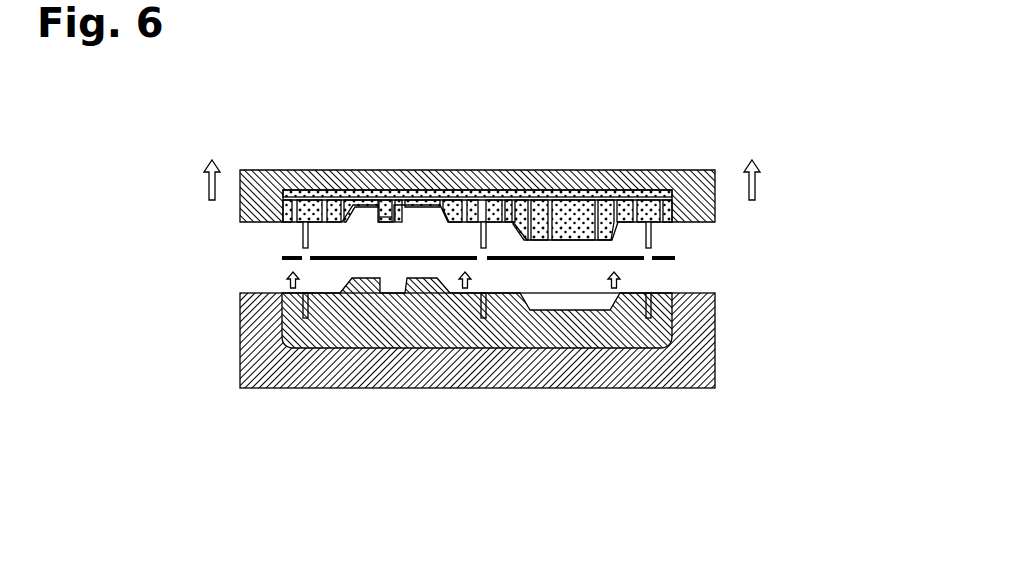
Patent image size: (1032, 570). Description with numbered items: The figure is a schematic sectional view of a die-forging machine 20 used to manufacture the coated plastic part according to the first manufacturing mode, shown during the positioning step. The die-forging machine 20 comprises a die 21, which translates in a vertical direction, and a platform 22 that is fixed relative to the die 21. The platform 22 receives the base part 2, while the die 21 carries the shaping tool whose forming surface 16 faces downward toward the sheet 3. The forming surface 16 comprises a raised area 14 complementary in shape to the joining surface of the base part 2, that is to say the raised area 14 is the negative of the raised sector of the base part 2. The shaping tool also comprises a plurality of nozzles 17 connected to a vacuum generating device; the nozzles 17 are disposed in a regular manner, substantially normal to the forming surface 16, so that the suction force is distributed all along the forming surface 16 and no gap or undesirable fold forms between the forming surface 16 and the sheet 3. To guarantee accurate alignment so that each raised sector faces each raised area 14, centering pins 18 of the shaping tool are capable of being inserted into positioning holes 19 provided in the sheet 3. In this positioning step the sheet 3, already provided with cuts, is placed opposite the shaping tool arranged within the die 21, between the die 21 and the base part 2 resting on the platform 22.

The base part 2 is at (328, 350).
The sheet 3 is at (264, 268).
The raised area 14 is at (410, 243).
The forming surface 16 is at (517, 222).
The nozzles 17 is at (426, 184).
The centering pins 18 is at (283, 236).
The positioning holes 19 is at (668, 276).
The die-forging machine 20 is at (745, 404).
The die 21 is at (690, 150).
The platform 22 is at (514, 410).